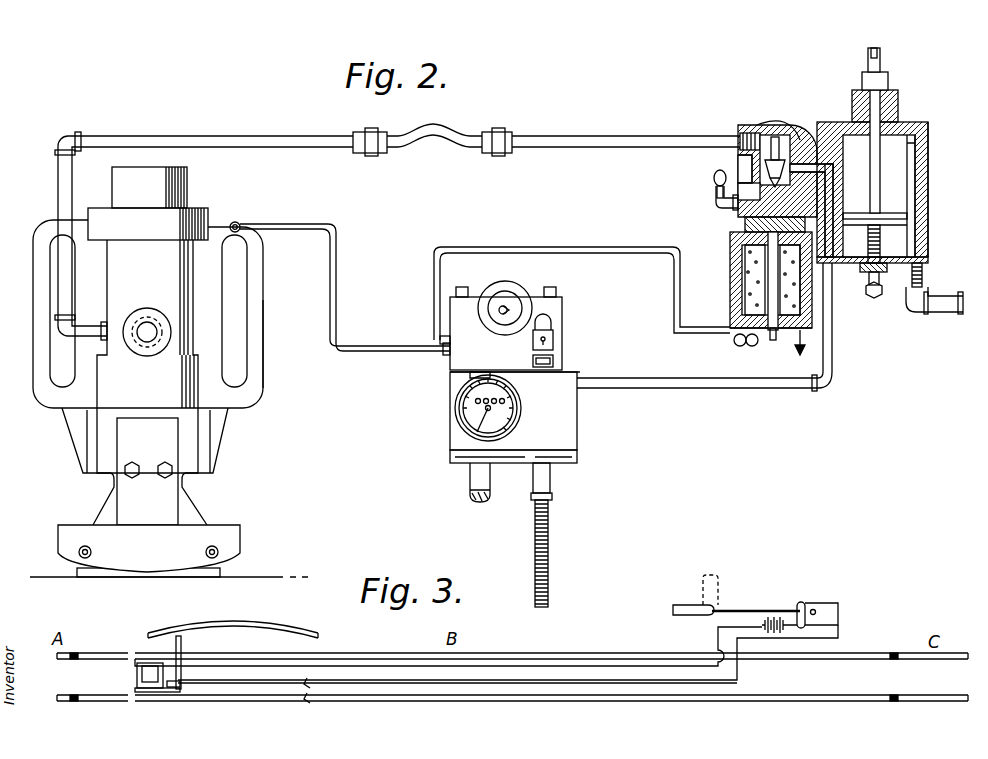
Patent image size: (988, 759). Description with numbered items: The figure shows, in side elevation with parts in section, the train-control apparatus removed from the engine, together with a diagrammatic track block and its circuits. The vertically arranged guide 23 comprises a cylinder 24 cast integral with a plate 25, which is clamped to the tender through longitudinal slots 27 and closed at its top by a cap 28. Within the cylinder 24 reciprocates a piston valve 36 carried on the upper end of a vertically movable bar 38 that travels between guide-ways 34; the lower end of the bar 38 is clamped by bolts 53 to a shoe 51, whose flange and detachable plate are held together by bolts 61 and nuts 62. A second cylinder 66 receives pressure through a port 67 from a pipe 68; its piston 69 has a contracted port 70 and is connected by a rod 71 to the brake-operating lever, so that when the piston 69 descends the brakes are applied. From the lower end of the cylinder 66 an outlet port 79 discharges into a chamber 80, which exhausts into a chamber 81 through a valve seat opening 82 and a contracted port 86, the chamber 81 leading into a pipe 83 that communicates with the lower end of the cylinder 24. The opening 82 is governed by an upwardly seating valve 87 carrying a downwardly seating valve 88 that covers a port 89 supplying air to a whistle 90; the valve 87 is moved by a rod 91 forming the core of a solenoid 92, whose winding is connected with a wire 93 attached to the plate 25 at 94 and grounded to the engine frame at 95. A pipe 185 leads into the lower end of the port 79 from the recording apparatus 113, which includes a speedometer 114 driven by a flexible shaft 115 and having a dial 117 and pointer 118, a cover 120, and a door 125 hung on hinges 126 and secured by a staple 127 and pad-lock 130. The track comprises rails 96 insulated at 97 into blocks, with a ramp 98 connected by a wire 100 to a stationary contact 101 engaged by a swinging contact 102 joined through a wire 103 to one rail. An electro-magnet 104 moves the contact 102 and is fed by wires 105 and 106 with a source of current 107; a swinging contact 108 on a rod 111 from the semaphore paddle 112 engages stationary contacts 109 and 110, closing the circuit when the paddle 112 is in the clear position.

In FIG. 2, the guide 23 is at (262, 303).
In FIG. 2, the cylinder 24 is at (147, 356).
In FIG. 2, the plate 25 is at (275, 344).
In FIG. 2, the longitudinal slots 27 is at (243, 284).
In FIG. 2, the cap 28 is at (172, 191).
In FIG. 2, the guide-ways 34 is at (197, 482).
In FIG. 2, the piston valve 36 is at (193, 446).
In FIG. 2, the vertically movable bar 38 is at (147, 471).
In FIG. 2, the shoe 51 is at (205, 536).
In FIG. 2, the bolts 53 is at (165, 461).
In FIG. 2, the bolts 61 is at (169, 560).
In FIG. 2, the nuts 62 is at (90, 551).
In FIG. 2, the cylinder 66 is at (928, 183).
In FIG. 2, the port 67 is at (929, 170).
In FIG. 2, the pipe 68 is at (950, 297).
In FIG. 2, the piston 69 is at (900, 226).
In FIG. 2, the contracted port 70 is at (858, 218).
In FIG. 2, the rod 71 is at (888, 148).
In FIG. 2, the outlet port 79 is at (835, 298).
In FIG. 2, the chamber 80 is at (803, 130).
In FIG. 2, the chamber 81 is at (752, 125).
In FIG. 2, the valve seat opening 82 is at (778, 124).
In FIG. 2, the pipe 83 is at (596, 137).
In FIG. 2, the contracted port 86 is at (738, 158).
In FIG. 2, the upwardly seating valve 87 is at (758, 165).
In FIG. 2, the downwardly seating valve 88 is at (795, 176).
In FIG. 2, the port 89 is at (730, 203).
In FIG. 2, the whistle 90 is at (713, 183).
In FIG. 2, the rod 91 is at (745, 224).
In FIG. 2, the solenoid 92 is at (740, 280).
In FIG. 2, the wire 93 is at (576, 253).
In FIG. 2, the connection 94 is at (238, 224).
In FIG. 2, the ground 95 is at (805, 352).
In FIG. 3, the rails 96 is at (380, 659).
In FIG. 3, the insulation 97 is at (70, 672).
In FIG. 3, the ramp 98 is at (294, 629).
In FIG. 3, the wire 100 is at (181, 644).
In FIG. 3, the stationary contact 101 is at (181, 686).
In FIG. 3, the swinging contact 102 is at (162, 692).
In FIG. 3, the wire 103 is at (142, 679).
In FIG. 3, the electro-magnet 104 is at (145, 663).
In FIG. 3, the wire 105 is at (342, 660).
In FIG. 3, the wire 106 is at (307, 702).
In FIG. 3, the source of current 107 is at (773, 612).
In FIG. 3, the swinging contact 108 is at (838, 625).
In FIG. 3, the stationary contact 109 is at (803, 602).
In FIG. 3, the stationary contact 110 is at (816, 611).
In FIG. 3, the rod 111 is at (745, 600).
In FIG. 3, the semaphore paddle 112 is at (685, 615).
In FIG. 2, the indicating and recording apparatus 113 is at (565, 420).
In FIG. 2, the speedometer 114 is at (565, 444).
In FIG. 2, the flexible shaft 115 is at (550, 546).
In FIG. 2, the dial 117 is at (512, 414).
In FIG. 2, the pointer 118 is at (457, 419).
In FIG. 2, the cover 120 is at (545, 320).
In FIG. 2, the door 125 is at (560, 310).
In FIG. 2, the hinges 126 is at (462, 287).
In FIG. 2, the staple 127 is at (553, 335).
In FIG. 2, the pad-lock 130 is at (553, 353).
In FIG. 2, the pipe 185 is at (718, 388).